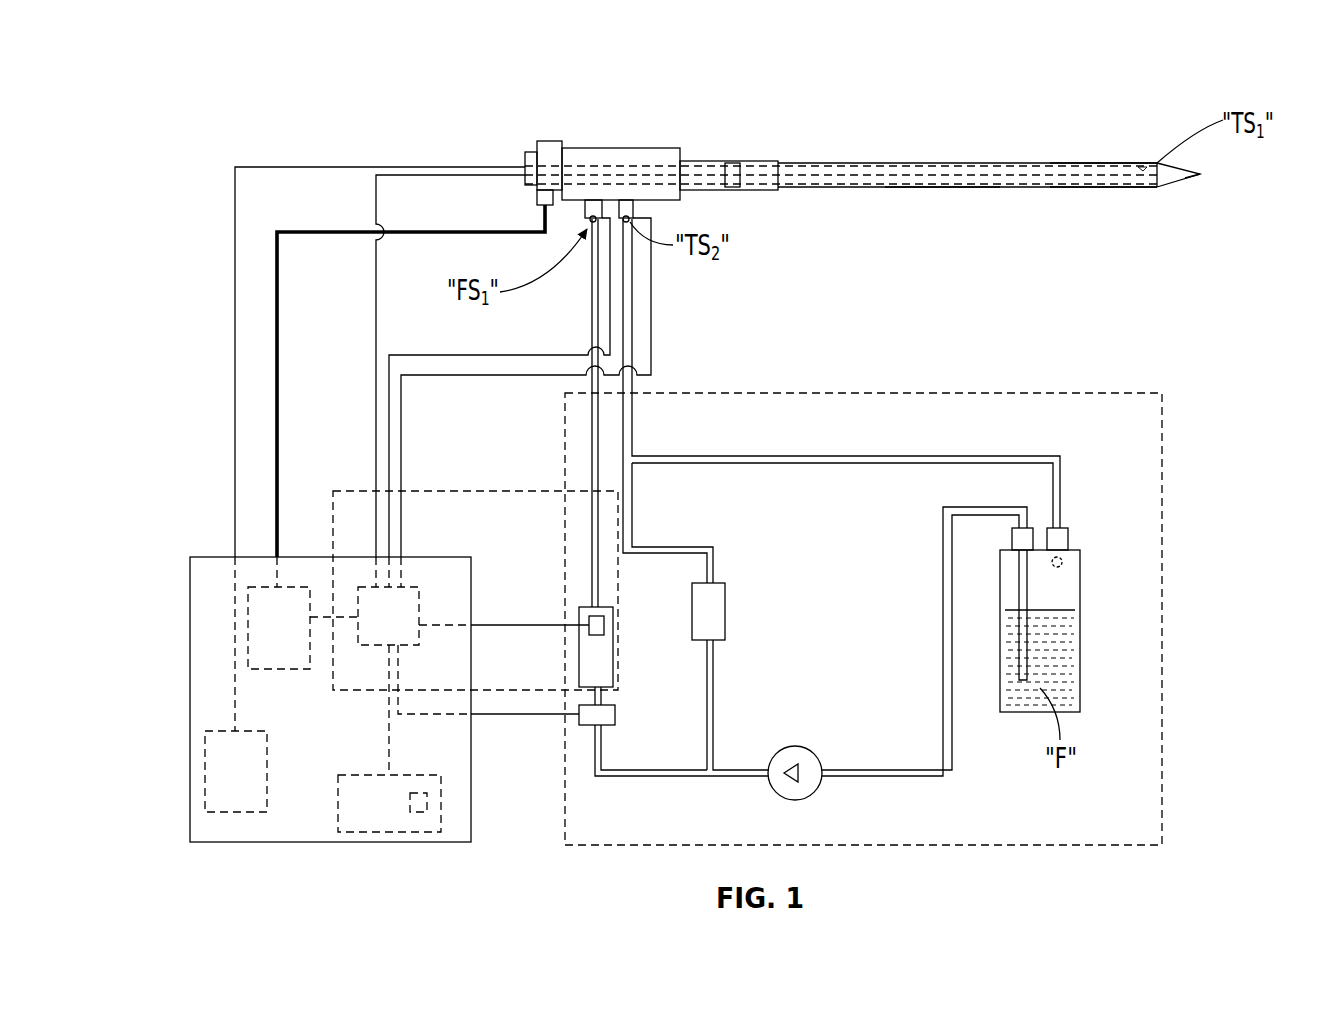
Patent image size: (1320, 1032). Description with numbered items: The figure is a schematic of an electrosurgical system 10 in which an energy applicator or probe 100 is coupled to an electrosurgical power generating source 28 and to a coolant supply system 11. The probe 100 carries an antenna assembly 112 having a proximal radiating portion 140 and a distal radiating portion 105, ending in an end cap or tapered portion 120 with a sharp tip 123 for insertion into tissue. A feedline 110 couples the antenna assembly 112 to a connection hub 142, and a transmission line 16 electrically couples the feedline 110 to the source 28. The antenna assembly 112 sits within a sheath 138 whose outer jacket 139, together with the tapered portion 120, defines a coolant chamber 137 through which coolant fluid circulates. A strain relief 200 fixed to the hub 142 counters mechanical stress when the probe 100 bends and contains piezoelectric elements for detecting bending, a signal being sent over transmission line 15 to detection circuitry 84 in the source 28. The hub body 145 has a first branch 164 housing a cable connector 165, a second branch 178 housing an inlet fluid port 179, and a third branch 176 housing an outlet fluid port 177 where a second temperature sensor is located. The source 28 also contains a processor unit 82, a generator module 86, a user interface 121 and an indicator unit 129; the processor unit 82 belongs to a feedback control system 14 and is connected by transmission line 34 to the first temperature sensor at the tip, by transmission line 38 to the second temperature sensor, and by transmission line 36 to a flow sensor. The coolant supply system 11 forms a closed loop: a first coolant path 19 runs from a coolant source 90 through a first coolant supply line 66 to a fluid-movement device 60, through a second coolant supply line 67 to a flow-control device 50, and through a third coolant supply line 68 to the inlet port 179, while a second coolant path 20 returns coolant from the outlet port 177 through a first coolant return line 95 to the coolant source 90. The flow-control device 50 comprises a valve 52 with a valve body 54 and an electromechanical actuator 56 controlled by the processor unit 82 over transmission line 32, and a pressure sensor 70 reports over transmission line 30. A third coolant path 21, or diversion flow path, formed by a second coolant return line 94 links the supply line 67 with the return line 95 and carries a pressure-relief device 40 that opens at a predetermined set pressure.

The electrosurgical system 10 is at (453, 63).
The probe 100 is at (1135, 85).
The antenna assembly 112 is at (953, 103).
The connection hub 142 is at (572, 135).
The hub body 145 is at (610, 148).
The feedline 110 is at (720, 160).
The sheath 138 is at (845, 195).
The strain relief 200 is at (750, 158).
The proximal radiating portion 140 is at (897, 160).
The outer jacket 139 is at (885, 187).
The distal radiating portion 105 is at (1100, 160).
The coolant chamber 137 is at (1060, 193).
The end cap or tapered portion 120 is at (1175, 170).
The sharp tip 123 is at (1200, 174).
The first branch 164 is at (537, 197).
The cable connector 165 is at (535, 208).
The third branch 176 is at (630, 205).
The outlet fluid port 177 is at (633, 232).
The second branch 178 is at (585, 215).
The inlet fluid port 179 is at (588, 221).
The transmission line 15 is at (288, 167).
The transmission line 34 is at (423, 175).
The transmission line 16 is at (343, 232).
The transmission line 36 is at (432, 355).
The transmission line 38 is at (651, 300).
The electrosurgical power generating source 28 is at (351, 752).
The generator module 86 is at (291, 640).
The processor unit 82 is at (401, 631).
The detection circuitry 84 is at (248, 788).
The user interface 121 is at (389, 817).
The indicator unit 129 is at (427, 803).
The feedback control system 14 is at (352, 491).
The transmission line 32 is at (548, 625).
The transmission line 30 is at (548, 714).
The coolant supply system 11 is at (1075, 393).
The second coolant path 20 is at (815, 445).
The first coolant return line 95 is at (632, 425).
The second coolant return line 94 is at (632, 518).
The pressure-relief device 40 is at (727, 613).
The third coolant path 21 is at (722, 700).
The third coolant supply line 68 is at (598, 594).
The flow-control device 50 is at (615, 640).
The electromechanical actuator 56 is at (604, 623).
The valve body 54 is at (600, 655).
The valve 52 is at (613, 678).
The pressure sensor 70 is at (617, 715).
The second coolant supply line 67 is at (601, 745).
The fluid-movement device 60 is at (795, 800).
The first coolant supply line 66 is at (942, 620).
The first coolant path 19 is at (937, 552).
The coolant source 90 is at (1082, 603).